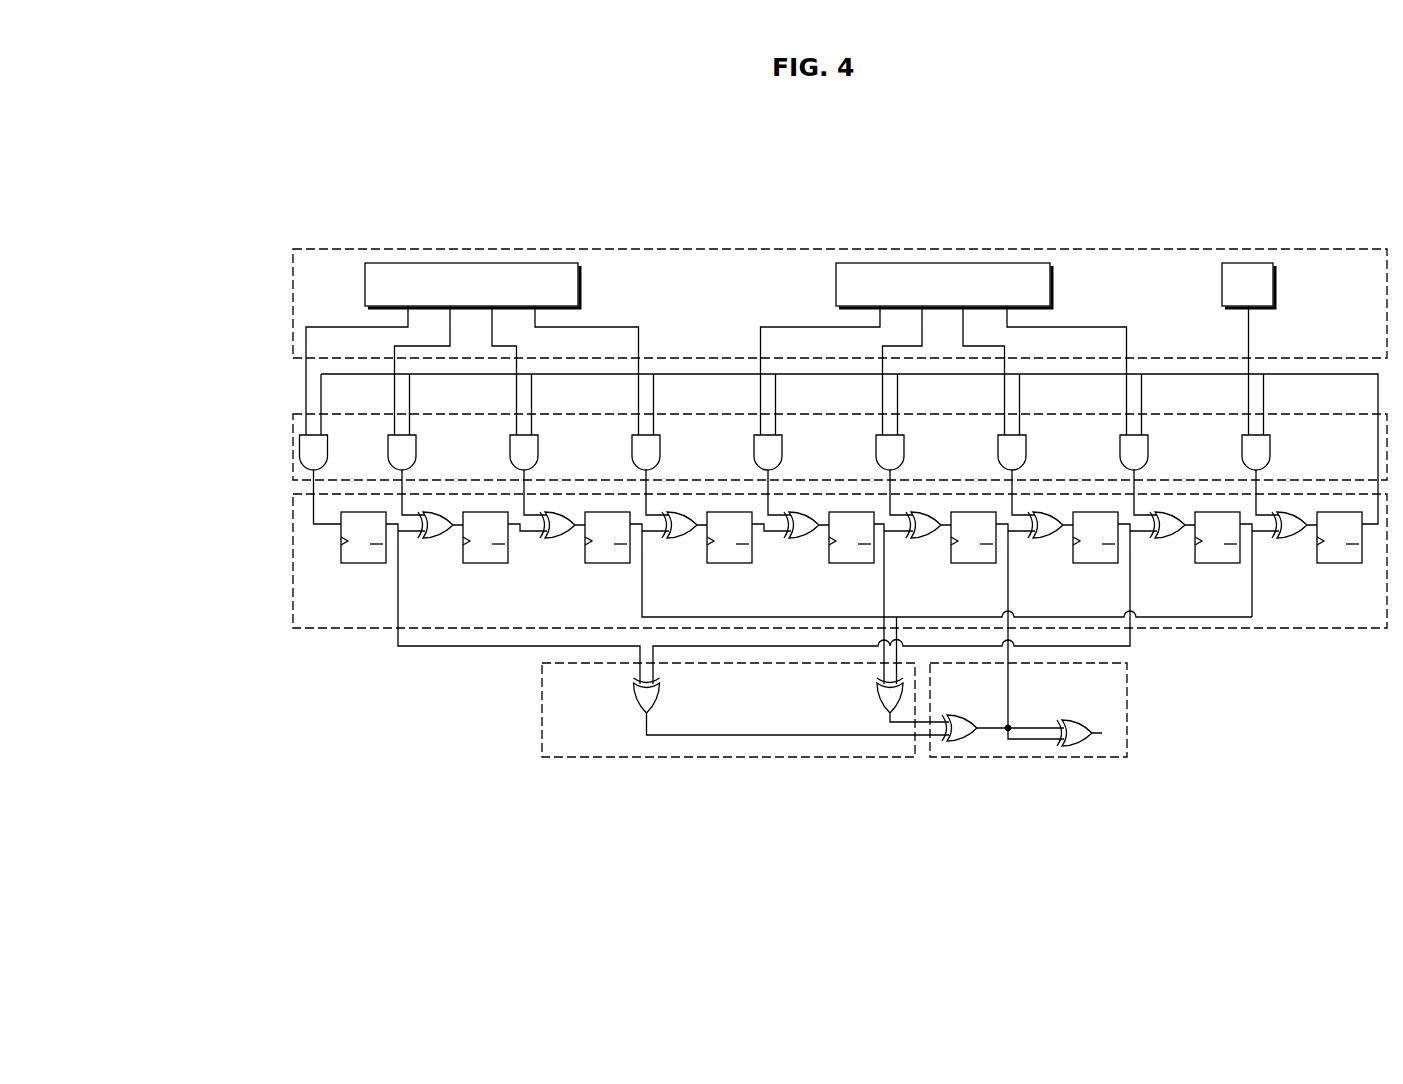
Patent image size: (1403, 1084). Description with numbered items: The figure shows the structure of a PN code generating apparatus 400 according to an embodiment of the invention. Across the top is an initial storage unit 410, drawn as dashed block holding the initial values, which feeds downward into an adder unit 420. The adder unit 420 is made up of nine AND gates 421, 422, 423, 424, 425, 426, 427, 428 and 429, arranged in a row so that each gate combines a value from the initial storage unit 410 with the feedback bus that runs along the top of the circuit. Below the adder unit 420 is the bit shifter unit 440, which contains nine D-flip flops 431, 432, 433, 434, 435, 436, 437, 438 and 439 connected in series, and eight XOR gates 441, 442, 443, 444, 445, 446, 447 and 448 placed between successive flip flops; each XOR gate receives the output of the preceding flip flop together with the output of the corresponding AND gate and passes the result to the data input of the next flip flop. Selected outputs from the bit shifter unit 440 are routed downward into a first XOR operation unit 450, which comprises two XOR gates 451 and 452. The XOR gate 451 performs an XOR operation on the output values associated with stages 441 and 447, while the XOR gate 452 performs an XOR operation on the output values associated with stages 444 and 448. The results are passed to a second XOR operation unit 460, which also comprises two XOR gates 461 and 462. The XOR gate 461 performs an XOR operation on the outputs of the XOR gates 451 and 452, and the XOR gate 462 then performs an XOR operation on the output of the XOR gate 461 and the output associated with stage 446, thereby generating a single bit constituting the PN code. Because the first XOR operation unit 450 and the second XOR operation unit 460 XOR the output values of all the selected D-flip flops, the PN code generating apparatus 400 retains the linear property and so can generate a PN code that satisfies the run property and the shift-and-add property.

The PN code generating apparatus 400 is at (838, 191).
The initial storage unit 410 is at (292, 302).
The adder unit 420 is at (292, 446).
The AND gate 421 is at (328, 449).
The AND gate 422 is at (416, 449).
The AND gate 423 is at (538, 449).
The AND gate 424 is at (660, 449).
The AND gate 425 is at (782, 449).
The AND gate 426 is at (904, 449).
The AND gate 427 is at (1026, 449).
The AND gate 428 is at (1148, 449).
The AND gate 429 is at (1270, 449).
The D-flip flop 431 is at (341, 555).
The D-flip flop 432 is at (463, 555).
The D-flip flop 433 is at (585, 555).
The D-flip flop 434 is at (707, 555).
The D-flip flop 435 is at (829, 555).
The D-flip flop 436 is at (951, 555).
The D-flip flop 437 is at (1073, 555).
The D-flip flop 438 is at (1195, 555).
The D-flip flop 439 is at (1317, 555).
The bit shifter unit 440 is at (292, 558).
The XOR gate 441 is at (441, 538).
The XOR gate 442 is at (563, 538).
The XOR gate 443 is at (685, 538).
The XOR gate 444 is at (807, 538).
The XOR gate 445 is at (929, 538).
The XOR gate 446 is at (1051, 538).
The XOR gate 447 is at (1173, 538).
The XOR gate 448 is at (1295, 538).
The first XOR operation unit 450 is at (542, 708).
The XOR gate 451 is at (633, 690).
The XOR gate 452 is at (877, 690).
The second XOR operation unit 460 is at (1128, 708).
The XOR gate 461 is at (960, 715).
The XOR gate 462 is at (1075, 720).